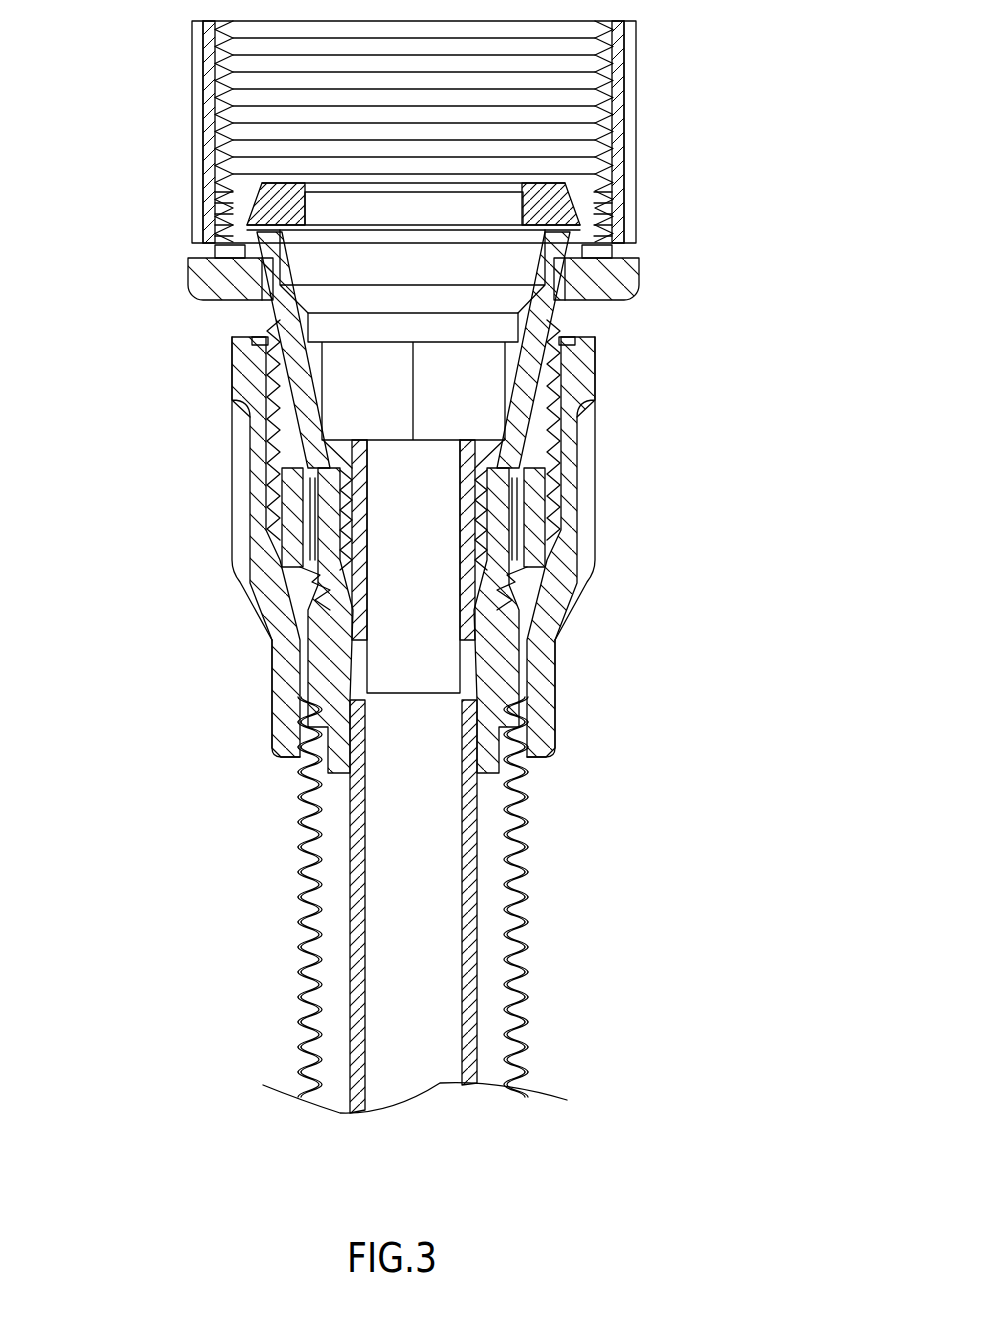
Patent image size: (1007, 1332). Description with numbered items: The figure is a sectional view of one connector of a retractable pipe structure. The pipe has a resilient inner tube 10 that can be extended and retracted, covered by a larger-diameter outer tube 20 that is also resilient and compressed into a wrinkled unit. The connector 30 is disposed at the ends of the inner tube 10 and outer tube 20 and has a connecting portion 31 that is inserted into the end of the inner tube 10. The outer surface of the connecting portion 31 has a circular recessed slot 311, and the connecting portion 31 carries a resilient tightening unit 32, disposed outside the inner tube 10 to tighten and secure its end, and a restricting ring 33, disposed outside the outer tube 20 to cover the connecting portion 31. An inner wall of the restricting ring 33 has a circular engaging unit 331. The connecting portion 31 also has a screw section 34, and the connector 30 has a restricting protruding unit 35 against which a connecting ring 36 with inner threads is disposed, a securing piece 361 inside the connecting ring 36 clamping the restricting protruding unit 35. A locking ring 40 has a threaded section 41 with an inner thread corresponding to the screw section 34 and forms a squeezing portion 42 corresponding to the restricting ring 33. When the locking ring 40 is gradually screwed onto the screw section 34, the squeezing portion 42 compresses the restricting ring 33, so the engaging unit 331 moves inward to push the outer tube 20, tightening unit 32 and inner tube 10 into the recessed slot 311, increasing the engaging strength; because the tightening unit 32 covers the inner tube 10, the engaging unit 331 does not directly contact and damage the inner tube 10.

The inner tube 10 is at (320, 880).
The outer tube 20 is at (264, 803).
The connector 30 is at (615, 319).
The connecting portion 31 is at (467, 547).
The circular recessed slot 311 is at (350, 616).
The resilient tightening unit 32 is at (340, 667).
The restricting ring 33 is at (293, 502).
The circular engaging unit 331 is at (308, 576).
The screw section 34 is at (540, 409).
The restricting protruding unit 35 is at (253, 243).
The connecting ring 36 is at (617, 100).
The securing piece 361 is at (617, 193).
The locking ring 40 is at (643, 480).
The threaded section 41 is at (584, 372).
The squeezing portion 42 is at (530, 606).